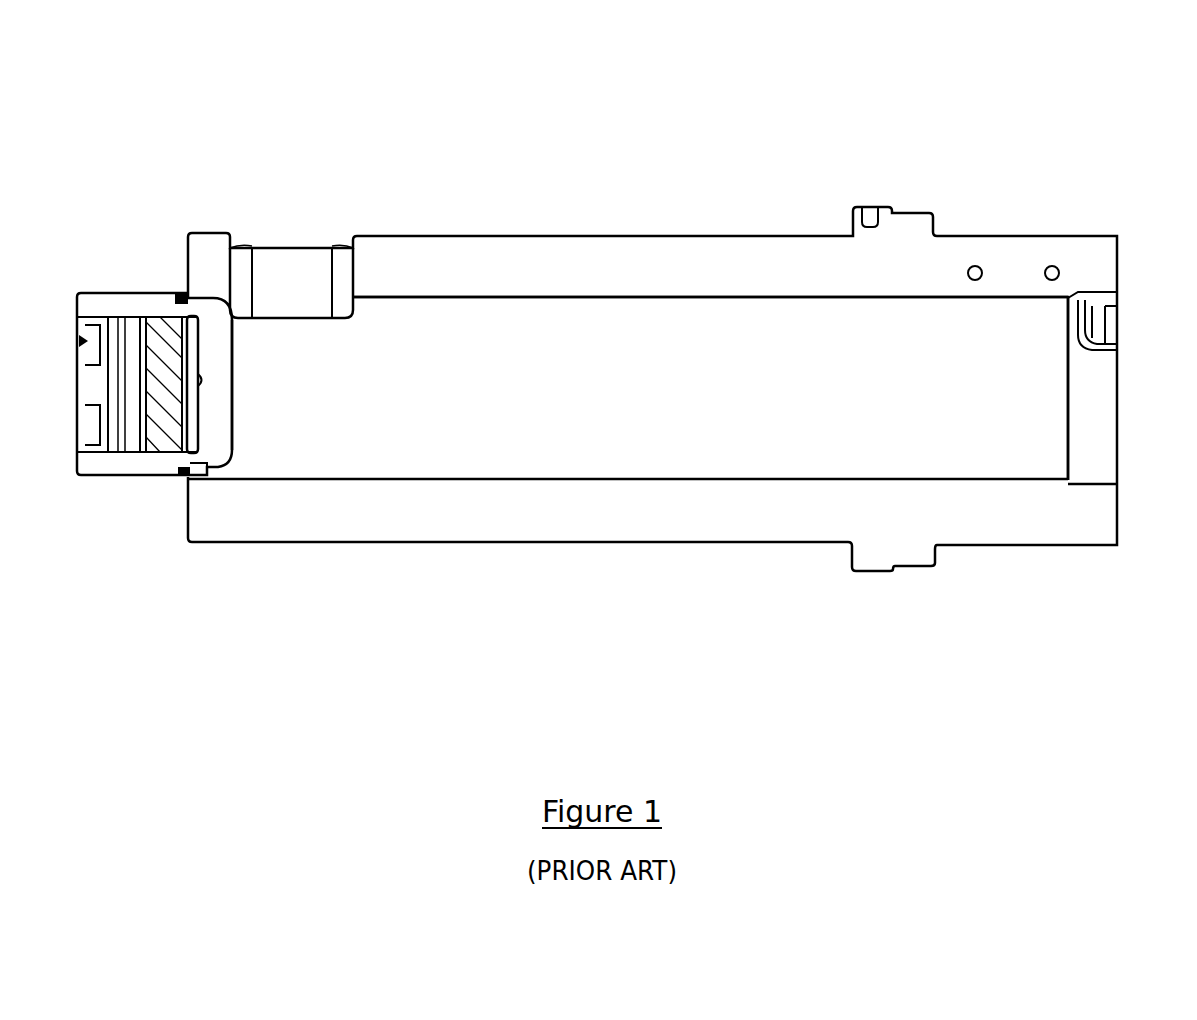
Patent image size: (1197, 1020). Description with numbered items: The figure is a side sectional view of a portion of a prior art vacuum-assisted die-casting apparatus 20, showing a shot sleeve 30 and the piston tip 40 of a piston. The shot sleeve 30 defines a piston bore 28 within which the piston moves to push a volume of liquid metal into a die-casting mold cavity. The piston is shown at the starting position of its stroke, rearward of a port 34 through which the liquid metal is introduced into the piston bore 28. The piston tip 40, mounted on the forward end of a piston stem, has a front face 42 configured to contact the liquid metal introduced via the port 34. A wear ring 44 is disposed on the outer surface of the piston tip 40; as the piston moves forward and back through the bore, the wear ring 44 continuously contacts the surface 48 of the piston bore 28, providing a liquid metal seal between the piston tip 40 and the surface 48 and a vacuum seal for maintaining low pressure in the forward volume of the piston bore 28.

The vacuum-assisted die-casting apparatus 20 is at (1065, 87).
The piston bore 28 is at (1035, 400).
The shot sleeve 30 is at (688, 247).
The port 34 is at (295, 242).
The piston tip 40 is at (137, 300).
The front face 42 is at (235, 420).
The wear ring 44 is at (207, 479).
The surface of the piston bore 48 is at (573, 297).